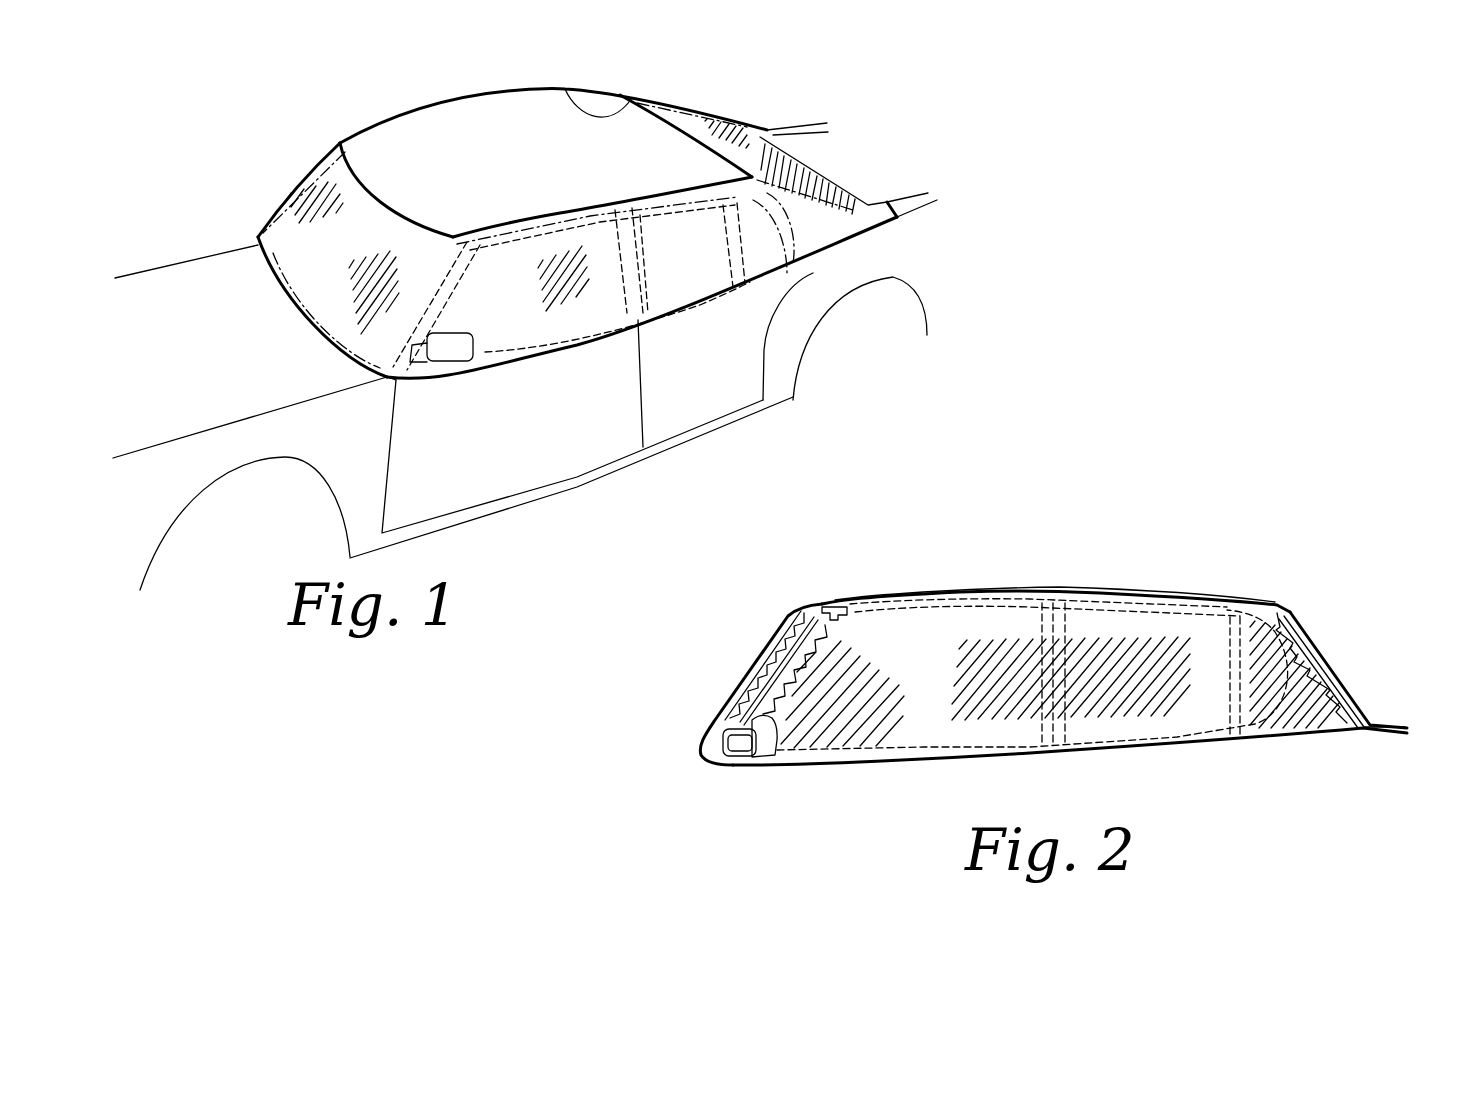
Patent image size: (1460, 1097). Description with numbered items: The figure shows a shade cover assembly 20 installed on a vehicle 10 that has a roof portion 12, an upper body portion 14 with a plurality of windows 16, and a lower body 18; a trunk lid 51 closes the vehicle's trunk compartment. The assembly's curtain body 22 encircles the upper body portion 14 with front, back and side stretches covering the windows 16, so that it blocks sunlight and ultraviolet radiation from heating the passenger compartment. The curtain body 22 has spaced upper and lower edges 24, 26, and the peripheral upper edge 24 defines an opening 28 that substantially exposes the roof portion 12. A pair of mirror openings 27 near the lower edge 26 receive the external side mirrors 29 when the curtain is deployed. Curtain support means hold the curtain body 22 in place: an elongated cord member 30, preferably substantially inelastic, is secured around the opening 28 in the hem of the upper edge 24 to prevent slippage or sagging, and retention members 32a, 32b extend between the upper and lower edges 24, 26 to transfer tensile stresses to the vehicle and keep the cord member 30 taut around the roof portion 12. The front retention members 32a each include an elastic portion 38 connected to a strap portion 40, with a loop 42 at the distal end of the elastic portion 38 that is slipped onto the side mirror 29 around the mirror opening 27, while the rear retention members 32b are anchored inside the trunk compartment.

In FIG. 1, the vehicle 10 is at (686, 413).
In FIG. 2, the vehicle 10 is at (1052, 581).
In FIG. 1, the roof portion 12 is at (538, 156).
In FIG. 2, the roof portion 12 is at (947, 590).
In FIG. 1, the upper body portion 14 is at (797, 238).
In FIG. 1, the windows 16 is at (313, 167).
In FIG. 2, the windows 16 is at (1193, 700).
In FIG. 1, the lower body 18 is at (480, 471).
In FIG. 1, the shade cover assembly 20 is at (296, 317).
In FIG. 2, the shade cover assembly 20 is at (948, 770).
In FIG. 1, the curtain body 22 is at (317, 248).
In FIG. 2, the curtain body 22 is at (1098, 717).
In FIG. 1, the upper edge 24 is at (505, 92).
In FIG. 1, the lower edge 26 is at (800, 273).
In FIG. 1, the mirror openings 27 is at (400, 376).
In FIG. 1, the opening 28 is at (573, 92).
In FIG. 1, the external side mirrors 29 is at (297, 192).
In FIG. 2, the external side mirrors 29 is at (763, 752).
In FIG. 2, the cord member 30 is at (833, 606).
In FIG. 2, the front retention members 32a is at (820, 637).
In FIG. 2, the rear retention members 32b is at (1347, 687).
In FIG. 2, the elastic portion 38 is at (727, 702).
In FIG. 2, the strap portion 40 is at (782, 631).
In FIG. 2, the loop 42 is at (710, 727).
In FIG. 1, the trunk lid 51 is at (818, 155).